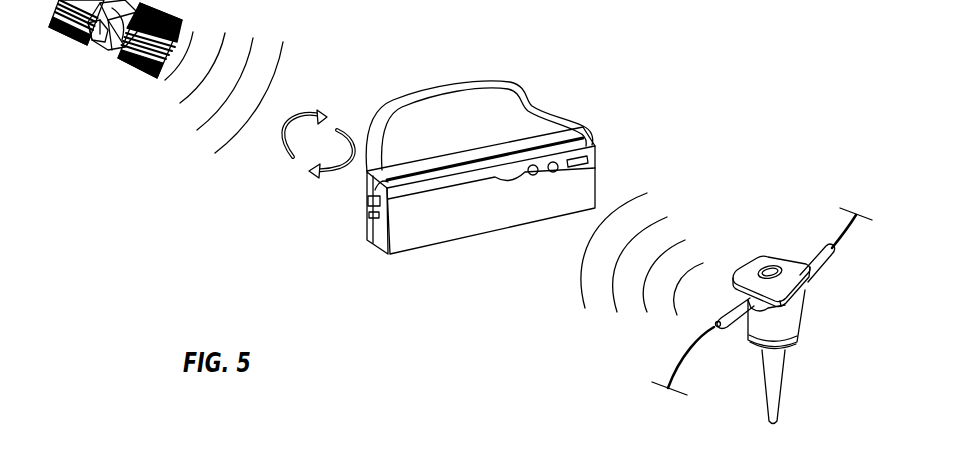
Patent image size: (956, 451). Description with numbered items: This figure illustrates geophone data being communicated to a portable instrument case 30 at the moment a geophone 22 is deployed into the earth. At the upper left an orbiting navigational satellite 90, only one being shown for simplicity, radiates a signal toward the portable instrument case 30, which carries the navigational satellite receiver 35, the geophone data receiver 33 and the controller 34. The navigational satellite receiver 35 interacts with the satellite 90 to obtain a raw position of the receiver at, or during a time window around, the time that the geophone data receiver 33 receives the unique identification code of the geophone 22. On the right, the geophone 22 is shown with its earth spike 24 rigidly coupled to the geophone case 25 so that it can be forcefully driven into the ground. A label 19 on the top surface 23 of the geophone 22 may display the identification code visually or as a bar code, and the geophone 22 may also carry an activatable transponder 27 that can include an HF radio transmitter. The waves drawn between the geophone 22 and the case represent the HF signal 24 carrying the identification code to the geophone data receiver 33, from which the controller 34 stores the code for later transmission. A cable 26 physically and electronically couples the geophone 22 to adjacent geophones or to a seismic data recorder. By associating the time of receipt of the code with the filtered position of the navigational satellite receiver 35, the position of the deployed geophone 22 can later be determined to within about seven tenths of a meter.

The navigational satellite 90 is at (103, 130).
The portable base unit 30 is at (453, 196).
The geophone data receiver 33 is at (495, 217).
The controller 34 is at (562, 200).
The navigational satellite receiver 35 is at (435, 230).
The earth spike 24 is at (671, 185).
The label 19 is at (768, 262).
The geophone 22 is at (777, 255).
The top surface 23 is at (764, 270).
The geophone case 25 is at (792, 322).
The cable 26 is at (833, 246).
The transponder 27 is at (797, 290).